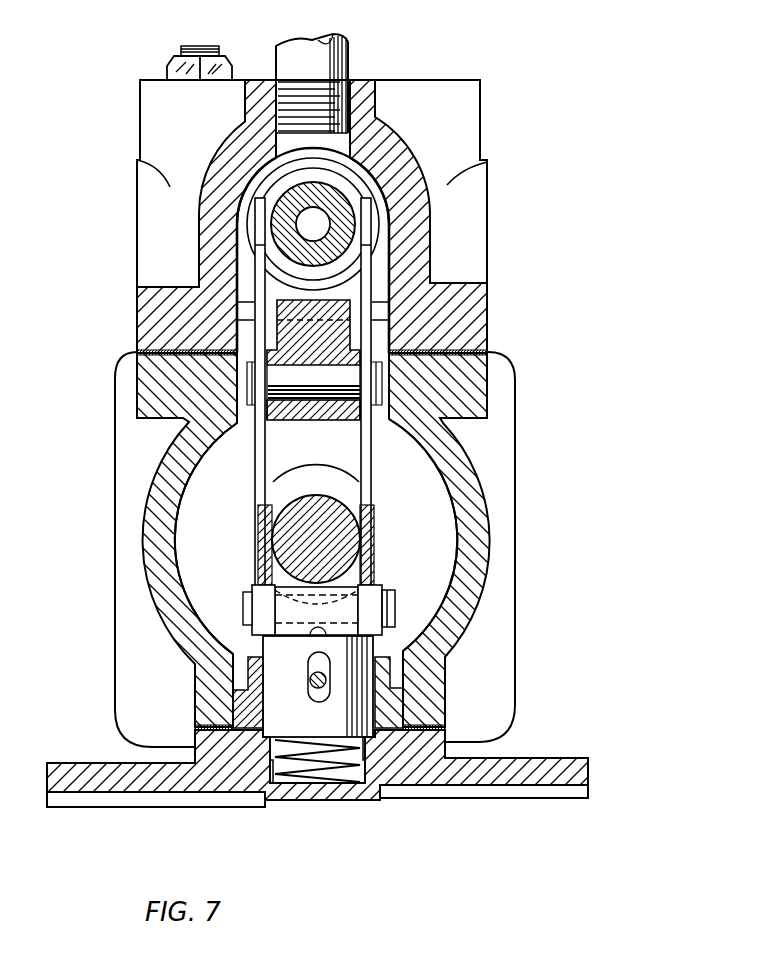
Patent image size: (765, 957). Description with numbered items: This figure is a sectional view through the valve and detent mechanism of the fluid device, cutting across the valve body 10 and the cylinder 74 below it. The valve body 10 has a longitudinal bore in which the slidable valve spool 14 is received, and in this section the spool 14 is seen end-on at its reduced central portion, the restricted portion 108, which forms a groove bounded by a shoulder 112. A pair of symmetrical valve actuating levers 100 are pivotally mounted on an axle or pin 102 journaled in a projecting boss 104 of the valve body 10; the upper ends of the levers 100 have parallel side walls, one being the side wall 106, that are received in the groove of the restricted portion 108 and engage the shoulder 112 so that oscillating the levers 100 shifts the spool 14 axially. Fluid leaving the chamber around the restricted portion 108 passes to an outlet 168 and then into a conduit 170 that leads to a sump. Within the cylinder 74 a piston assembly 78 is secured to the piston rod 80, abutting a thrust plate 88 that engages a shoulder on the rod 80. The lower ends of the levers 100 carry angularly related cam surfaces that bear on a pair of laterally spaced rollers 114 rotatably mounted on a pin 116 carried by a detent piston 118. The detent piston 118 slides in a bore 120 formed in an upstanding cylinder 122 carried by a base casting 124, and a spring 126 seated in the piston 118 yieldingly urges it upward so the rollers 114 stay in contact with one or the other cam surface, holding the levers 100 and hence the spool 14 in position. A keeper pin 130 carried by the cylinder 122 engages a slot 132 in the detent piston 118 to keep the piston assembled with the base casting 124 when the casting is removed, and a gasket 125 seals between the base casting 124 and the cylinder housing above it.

The valve body 10 is at (508, 168).
The valve spool 14 is at (322, 235).
The cylinder 74 is at (470, 476).
The piston assembly 78 is at (205, 561).
The piston rod 80 is at (292, 512).
The thrust plate 88 is at (325, 493).
The valve actuating levers 100 is at (256, 467).
The axle or pin 102 is at (320, 385).
The projecting boss 104 is at (280, 418).
The side wall 106 is at (365, 225).
The restricted portion 108 is at (350, 193).
The shoulder 112 is at (343, 183).
The rollers 114 is at (380, 585).
The pin 116 is at (396, 597).
The detent piston 118 is at (332, 726).
The bore 120 is at (375, 745).
The upstanding cylinder 122 is at (392, 700).
The base casting 124 is at (586, 778).
The gasket 125 is at (200, 727).
The spring 126 is at (300, 775).
The keeper pin 130 is at (312, 684).
The slot 132 is at (313, 655).
The outlet 168 is at (283, 105).
The conduit 170 is at (278, 44).